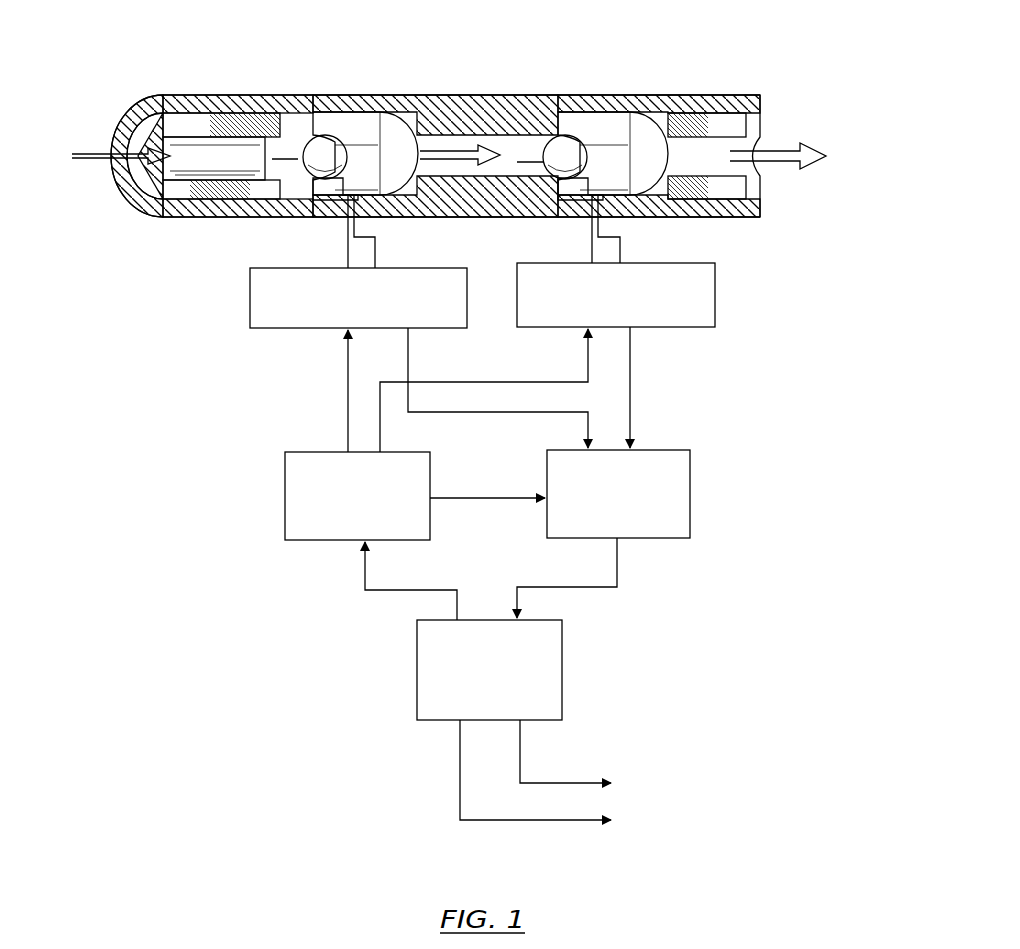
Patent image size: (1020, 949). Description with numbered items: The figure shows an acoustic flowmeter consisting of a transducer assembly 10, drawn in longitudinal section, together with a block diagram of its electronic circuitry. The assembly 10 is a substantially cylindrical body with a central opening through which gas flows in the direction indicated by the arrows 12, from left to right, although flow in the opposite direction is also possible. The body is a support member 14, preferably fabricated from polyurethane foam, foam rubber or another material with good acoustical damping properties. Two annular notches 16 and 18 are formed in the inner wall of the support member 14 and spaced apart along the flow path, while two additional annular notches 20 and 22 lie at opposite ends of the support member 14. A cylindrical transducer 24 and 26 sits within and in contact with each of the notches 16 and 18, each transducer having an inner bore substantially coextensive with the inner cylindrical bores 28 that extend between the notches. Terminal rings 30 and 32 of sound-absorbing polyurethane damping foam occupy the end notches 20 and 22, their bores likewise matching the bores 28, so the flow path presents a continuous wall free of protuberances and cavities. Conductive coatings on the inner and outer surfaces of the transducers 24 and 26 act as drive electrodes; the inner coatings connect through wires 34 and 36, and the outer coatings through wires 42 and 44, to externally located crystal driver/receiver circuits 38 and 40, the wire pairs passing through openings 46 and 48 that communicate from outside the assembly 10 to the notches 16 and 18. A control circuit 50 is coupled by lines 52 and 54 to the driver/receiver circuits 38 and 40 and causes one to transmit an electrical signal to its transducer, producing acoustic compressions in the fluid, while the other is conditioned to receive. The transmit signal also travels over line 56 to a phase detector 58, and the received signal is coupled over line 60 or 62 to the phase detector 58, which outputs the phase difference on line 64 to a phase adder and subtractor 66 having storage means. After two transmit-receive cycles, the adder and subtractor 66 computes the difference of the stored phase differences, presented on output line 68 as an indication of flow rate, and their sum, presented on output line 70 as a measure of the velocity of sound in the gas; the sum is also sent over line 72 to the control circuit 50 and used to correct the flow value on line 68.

The transducer assembly 10 is at (475, 62).
The arrows 12 is at (115, 150).
The support member 14 is at (302, 95).
The annular notch 16 is at (340, 112).
The annular notch 18 is at (605, 112).
The annular notch 20 is at (222, 112).
The annular notch 22 is at (715, 113).
The cylindrical transducer 24 is at (370, 100).
The cylindrical transducer 26 is at (575, 112).
The inner cylindrical bores 28 is at (407, 151).
The terminal ring 30 is at (256, 113).
The terminal ring 32 is at (685, 113).
The wire 34 is at (348, 252).
The wire 36 is at (592, 252).
The crystal driver/receiver circuit 38 is at (250, 315).
The crystal driver/receiver circuit 40 is at (715, 305).
The wire 42 is at (375, 258).
The wire 44 is at (620, 255).
The opening 46 is at (375, 218).
The opening 48 is at (565, 218).
The control circuit 50 is at (285, 498).
The line 52 is at (348, 420).
The line 54 is at (500, 382).
The line 56 is at (500, 498).
The phase detector 58 is at (690, 480).
The line 60 is at (500, 412).
The line 62 is at (630, 395).
The line 64 is at (617, 587).
The phase adder and subtractor 66 is at (417, 685).
The output line 68 is at (545, 783).
The output line 70 is at (555, 820).
The line 72 is at (430, 590).